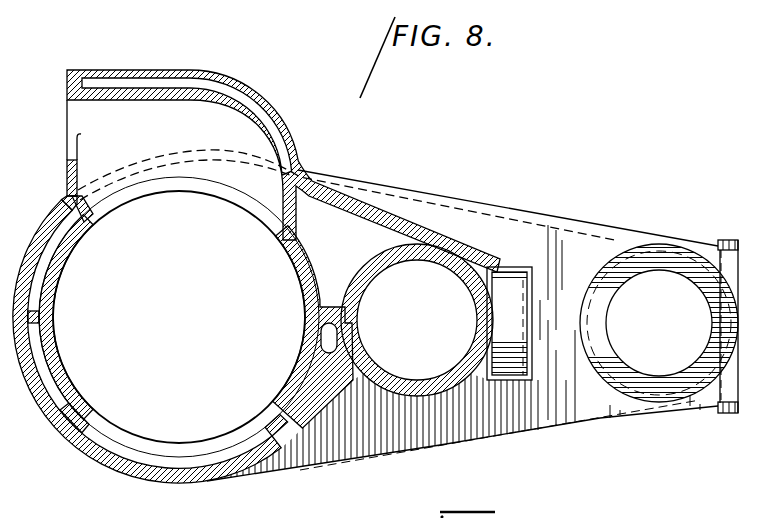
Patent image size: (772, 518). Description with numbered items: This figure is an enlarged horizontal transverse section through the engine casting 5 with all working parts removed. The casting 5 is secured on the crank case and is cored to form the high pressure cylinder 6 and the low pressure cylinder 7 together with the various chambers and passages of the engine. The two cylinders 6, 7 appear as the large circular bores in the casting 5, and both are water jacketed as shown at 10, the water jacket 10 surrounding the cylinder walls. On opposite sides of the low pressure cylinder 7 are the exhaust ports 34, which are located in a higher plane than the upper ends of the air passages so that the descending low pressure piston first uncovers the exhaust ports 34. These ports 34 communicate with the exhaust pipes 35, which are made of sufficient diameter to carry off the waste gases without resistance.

The casting 5 is at (387, 437).
The high pressure cylinder 6 is at (386, 268).
The low pressure cylinder 7 is at (72, 381).
The water jacket 10 is at (190, 76).
The exhaust ports 34 is at (182, 192).
The exhaust pipes 35 is at (72, 112).